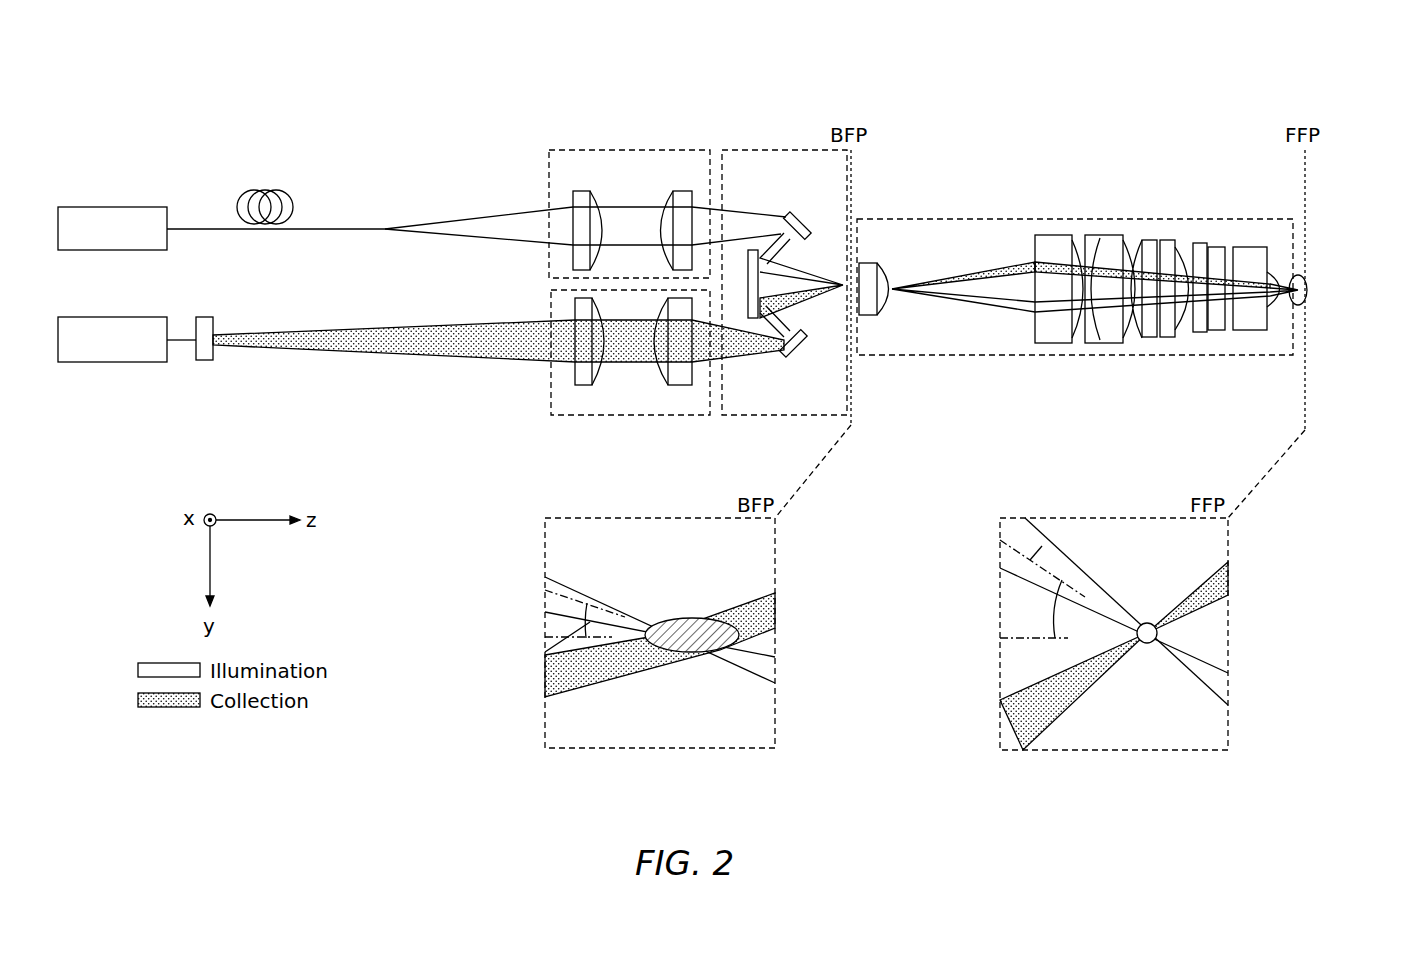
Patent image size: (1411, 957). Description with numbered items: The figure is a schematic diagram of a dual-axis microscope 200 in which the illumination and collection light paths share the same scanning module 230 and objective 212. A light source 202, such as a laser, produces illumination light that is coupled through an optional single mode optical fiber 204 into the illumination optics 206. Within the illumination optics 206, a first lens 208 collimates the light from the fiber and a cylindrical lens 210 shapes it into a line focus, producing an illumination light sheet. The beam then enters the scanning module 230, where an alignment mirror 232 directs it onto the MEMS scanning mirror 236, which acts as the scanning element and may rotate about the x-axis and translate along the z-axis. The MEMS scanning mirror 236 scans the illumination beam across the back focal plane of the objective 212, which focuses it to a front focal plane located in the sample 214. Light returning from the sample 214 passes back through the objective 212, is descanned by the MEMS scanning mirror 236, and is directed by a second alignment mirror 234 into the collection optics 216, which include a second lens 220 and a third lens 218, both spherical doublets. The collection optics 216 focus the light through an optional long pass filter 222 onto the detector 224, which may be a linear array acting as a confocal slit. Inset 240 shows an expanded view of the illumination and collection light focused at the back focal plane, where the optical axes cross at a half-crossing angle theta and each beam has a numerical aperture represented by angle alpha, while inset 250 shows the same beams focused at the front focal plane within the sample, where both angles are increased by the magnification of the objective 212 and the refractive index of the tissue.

The microscope 200 is at (127, 80).
The light source 202 is at (113, 207).
The optical fiber 204 is at (258, 190).
The illumination optics 206 is at (625, 150).
The first lens 208 is at (575, 212).
The cylindrical lens 210 is at (662, 200).
The objective 212 is at (988, 219).
The sample 214 is at (1312, 290).
The collection optics 216 is at (612, 416).
The third lens 218 is at (577, 318).
The second lens 220 is at (655, 386).
The filter 222 is at (205, 317).
The detector 224 is at (113, 317).
The scanning module 230 is at (798, 150).
The alignment mirror 232 is at (806, 213).
The alignment mirror 234 is at (790, 358).
The MEMS scanning mirror 236 is at (770, 249).
The inset 240 is at (623, 518).
The inset 250 is at (1075, 518).